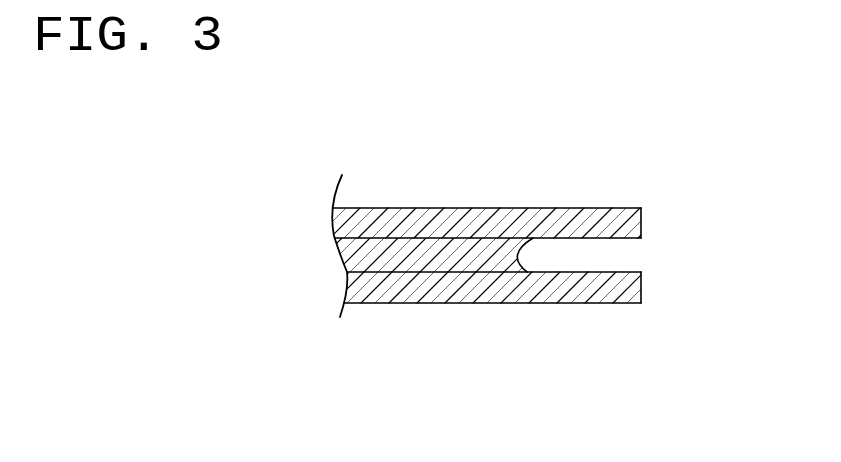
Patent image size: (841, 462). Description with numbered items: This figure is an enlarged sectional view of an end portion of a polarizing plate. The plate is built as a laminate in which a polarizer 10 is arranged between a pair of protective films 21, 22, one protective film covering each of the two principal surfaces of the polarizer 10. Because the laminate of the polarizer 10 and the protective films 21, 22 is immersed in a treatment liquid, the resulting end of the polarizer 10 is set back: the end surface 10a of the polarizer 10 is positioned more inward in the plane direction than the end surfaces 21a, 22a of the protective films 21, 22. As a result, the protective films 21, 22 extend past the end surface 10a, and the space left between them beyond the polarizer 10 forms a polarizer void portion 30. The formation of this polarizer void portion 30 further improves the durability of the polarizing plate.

The protective film 21 is at (487, 222).
The end surface of protective film 21a is at (641, 217).
The polarizer 10 is at (385, 257).
The end surface of polarizer 10a is at (517, 252).
The protective film 22 is at (498, 297).
The end surface of protective film 22a is at (641, 285).
The polarizer void portion 30 is at (565, 263).